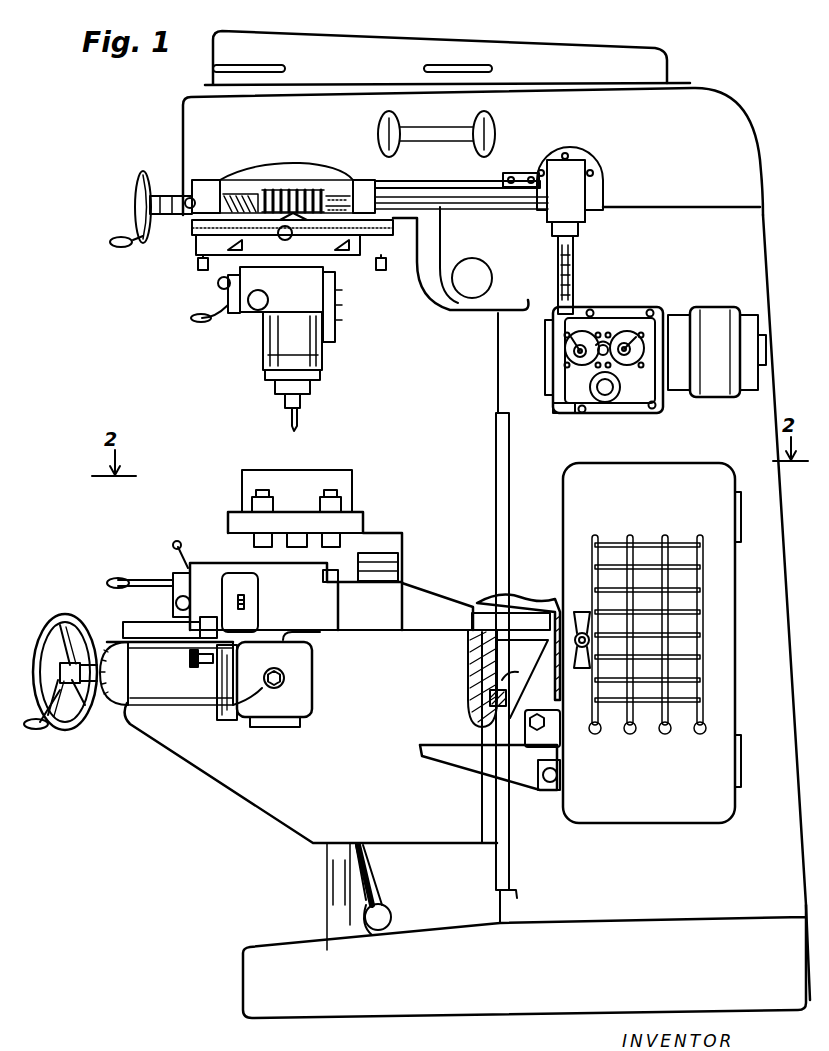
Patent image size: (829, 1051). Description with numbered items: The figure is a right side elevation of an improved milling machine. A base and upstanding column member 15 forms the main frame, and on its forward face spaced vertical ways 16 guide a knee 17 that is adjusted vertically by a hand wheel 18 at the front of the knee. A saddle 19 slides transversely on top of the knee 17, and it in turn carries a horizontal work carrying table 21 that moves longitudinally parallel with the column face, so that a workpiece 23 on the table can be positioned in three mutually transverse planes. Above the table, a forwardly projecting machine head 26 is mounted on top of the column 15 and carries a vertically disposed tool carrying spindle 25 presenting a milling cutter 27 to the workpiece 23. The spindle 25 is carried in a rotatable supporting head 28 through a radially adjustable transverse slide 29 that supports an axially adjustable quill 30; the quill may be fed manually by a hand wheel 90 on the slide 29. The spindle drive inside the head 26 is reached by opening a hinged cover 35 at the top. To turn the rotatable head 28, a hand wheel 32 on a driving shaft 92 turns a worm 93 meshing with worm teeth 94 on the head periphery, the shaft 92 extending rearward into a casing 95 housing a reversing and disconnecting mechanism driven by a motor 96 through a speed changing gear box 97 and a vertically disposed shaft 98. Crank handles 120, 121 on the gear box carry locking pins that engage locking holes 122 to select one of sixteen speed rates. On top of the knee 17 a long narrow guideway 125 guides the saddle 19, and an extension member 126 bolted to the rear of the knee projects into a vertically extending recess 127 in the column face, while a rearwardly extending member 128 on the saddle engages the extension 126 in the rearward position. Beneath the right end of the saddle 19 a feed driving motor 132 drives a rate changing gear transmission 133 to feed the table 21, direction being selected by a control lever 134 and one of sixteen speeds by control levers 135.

The column member 15 is at (500, 379).
The vertical ways 16 is at (498, 458).
The knee 17 is at (222, 782).
The hand wheel 18 is at (70, 735).
The saddle 19 is at (396, 622).
The work carrying table 21 is at (385, 538).
The workpiece 23 is at (332, 472).
The tool carrying spindle 25 is at (284, 400).
The machine head 26 is at (190, 120).
The milling cutter 27 is at (292, 422).
The rotatable supporting head 28 is at (388, 246).
The transverse slide 29 is at (238, 270).
The quill 30 is at (318, 391).
The hand wheel 32 is at (140, 180).
The hinged cover 35 is at (455, 44).
The hand wheel 90 is at (215, 308).
The driving shaft 92 is at (240, 196).
The worm 93 is at (283, 192).
The worm teeth 94 is at (370, 177).
The casing 95 is at (572, 168).
The driving motor 96 is at (710, 312).
The speed changing gear box 97 is at (590, 356).
The vertically disposed shaft 98 is at (562, 282).
The actuating crank handle 120 is at (637, 325).
The actuating crank handle 121 is at (572, 342).
The locking holes 122 is at (607, 320).
The guideway 125 is at (140, 620).
The extension member 126 is at (520, 664).
The recess 127 is at (540, 590).
The rearwardly extending member 128 is at (420, 595).
The feed driving motor 132 is at (300, 697).
The rate changing gear transmission 133 is at (306, 720).
The control lever 134 is at (122, 582).
The control levers 135 is at (196, 660).